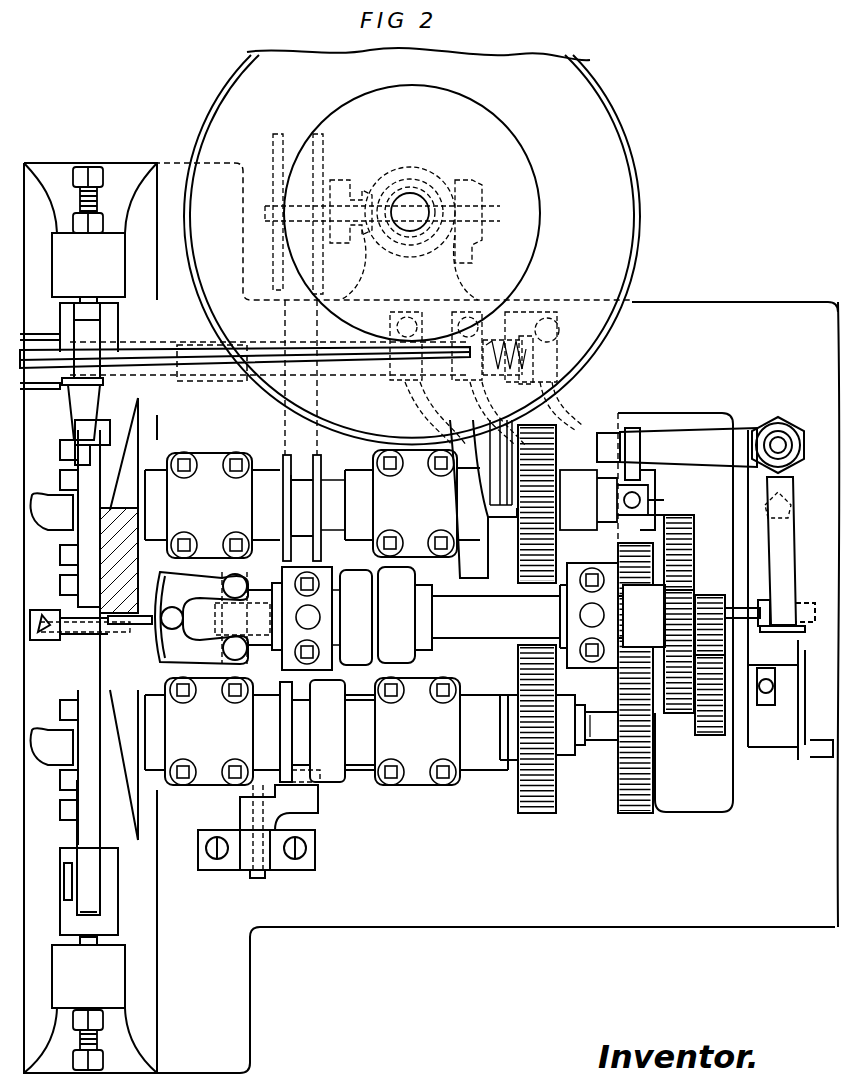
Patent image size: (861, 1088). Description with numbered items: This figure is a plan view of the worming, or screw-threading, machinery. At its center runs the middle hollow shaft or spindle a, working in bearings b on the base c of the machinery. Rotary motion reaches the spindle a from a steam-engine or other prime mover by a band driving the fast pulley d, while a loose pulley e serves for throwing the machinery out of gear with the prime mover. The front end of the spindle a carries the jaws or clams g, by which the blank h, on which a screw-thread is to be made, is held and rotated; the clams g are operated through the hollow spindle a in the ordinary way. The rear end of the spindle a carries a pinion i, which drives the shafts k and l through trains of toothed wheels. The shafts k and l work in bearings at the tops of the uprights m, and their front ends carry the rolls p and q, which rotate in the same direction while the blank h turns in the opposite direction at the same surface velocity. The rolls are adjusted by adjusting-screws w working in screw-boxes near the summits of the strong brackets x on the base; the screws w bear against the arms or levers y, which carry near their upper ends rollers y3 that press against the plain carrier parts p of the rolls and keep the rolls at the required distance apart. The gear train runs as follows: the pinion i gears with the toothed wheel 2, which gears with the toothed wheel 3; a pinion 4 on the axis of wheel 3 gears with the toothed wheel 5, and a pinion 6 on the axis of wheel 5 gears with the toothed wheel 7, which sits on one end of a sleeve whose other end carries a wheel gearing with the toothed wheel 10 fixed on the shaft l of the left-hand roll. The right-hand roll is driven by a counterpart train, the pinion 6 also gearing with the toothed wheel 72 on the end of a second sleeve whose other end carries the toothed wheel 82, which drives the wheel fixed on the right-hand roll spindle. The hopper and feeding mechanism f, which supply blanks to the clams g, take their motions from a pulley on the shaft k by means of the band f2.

The adjusting-screws w is at (88, 166).
The brackets x is at (88, 620).
The arms or levers y is at (118, 914).
The rollers y3 is at (90, 347).
The rolls q is at (130, 850).
The rolls p is at (95, 632).
The blank h is at (143, 615).
The jaws or clams g is at (195, 580).
The uprights m is at (326, 617).
The shaft k is at (318, 505).
The hopper and feeding mechanism f is at (494, 343).
The band f2 is at (284, 447).
The bearings b is at (450, 616).
The fast pulley d is at (352, 617).
The loose pulley e is at (405, 615).
The hollow shaft or spindle a is at (546, 617).
The toothed wheel 82 is at (517, 560).
The toothed wheel 10 is at (541, 812).
The toothed wheel 7 is at (638, 812).
The pinion 6 is at (658, 640).
The toothed wheel 5 is at (686, 552).
The pinion 4 is at (685, 715).
The pinion i is at (710, 596).
The toothed wheel 3 is at (710, 735).
The toothed wheel 2 is at (700, 632).
The toothed wheel 72 is at (652, 463).
The shaft l is at (327, 731).
The base c is at (565, 893).